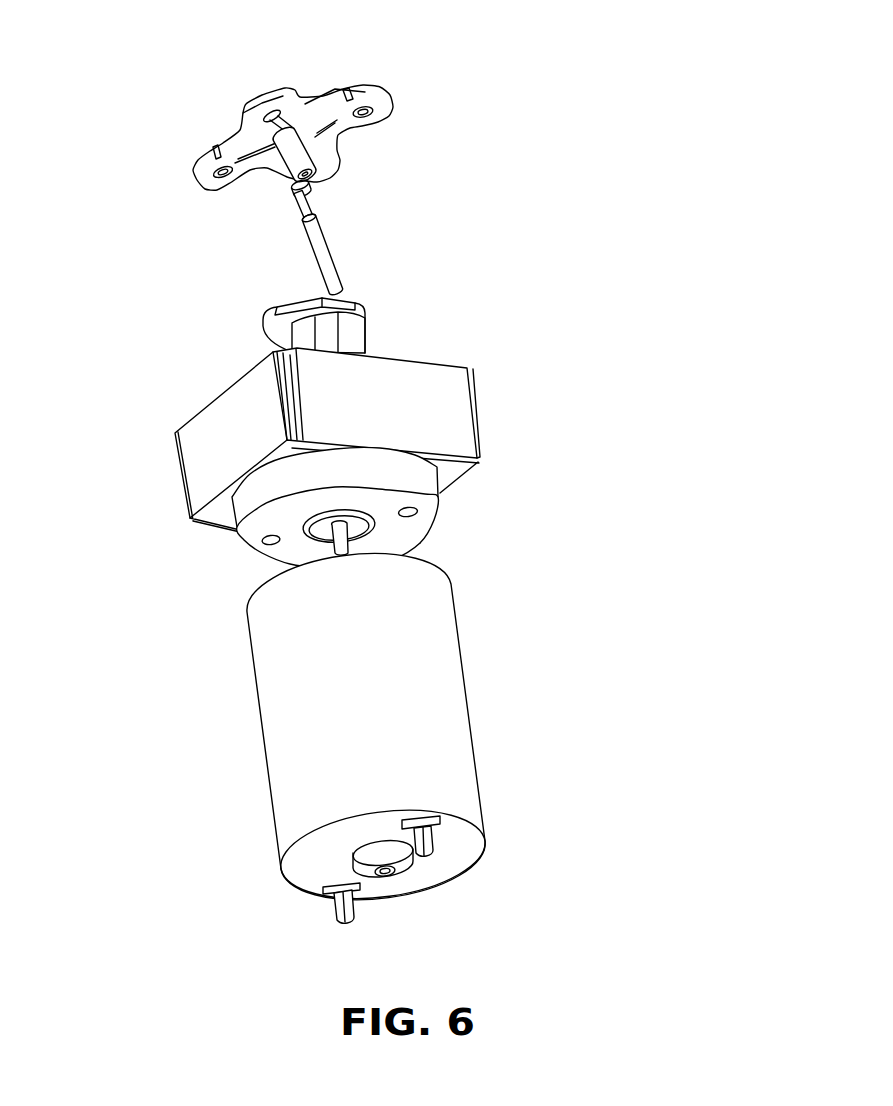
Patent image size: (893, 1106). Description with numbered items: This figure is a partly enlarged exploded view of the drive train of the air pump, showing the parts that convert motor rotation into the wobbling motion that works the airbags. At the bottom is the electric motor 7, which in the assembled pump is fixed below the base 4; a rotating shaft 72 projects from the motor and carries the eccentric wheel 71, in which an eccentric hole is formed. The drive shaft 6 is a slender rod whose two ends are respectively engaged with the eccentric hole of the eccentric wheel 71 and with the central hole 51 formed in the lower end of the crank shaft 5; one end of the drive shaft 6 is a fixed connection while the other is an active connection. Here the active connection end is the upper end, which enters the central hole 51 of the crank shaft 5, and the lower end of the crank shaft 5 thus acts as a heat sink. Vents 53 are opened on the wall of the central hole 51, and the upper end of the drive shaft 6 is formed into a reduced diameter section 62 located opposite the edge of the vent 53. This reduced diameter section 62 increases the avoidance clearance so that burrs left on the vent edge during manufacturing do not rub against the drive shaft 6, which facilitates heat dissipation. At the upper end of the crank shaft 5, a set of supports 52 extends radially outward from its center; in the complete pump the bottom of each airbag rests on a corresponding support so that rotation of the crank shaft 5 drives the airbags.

The base 4 is at (207, 457).
The crank shaft 5 is at (490, 20).
The central hole 51 is at (290, 177).
The supports 52 is at (380, 97).
The vents 53 is at (295, 138).
The drive shaft 6 is at (323, 248).
The reduced diameter section 62 is at (290, 207).
The electric motor 7 is at (433, 703).
The eccentric wheel 71 is at (267, 322).
The rotating shaft 72 is at (365, 550).